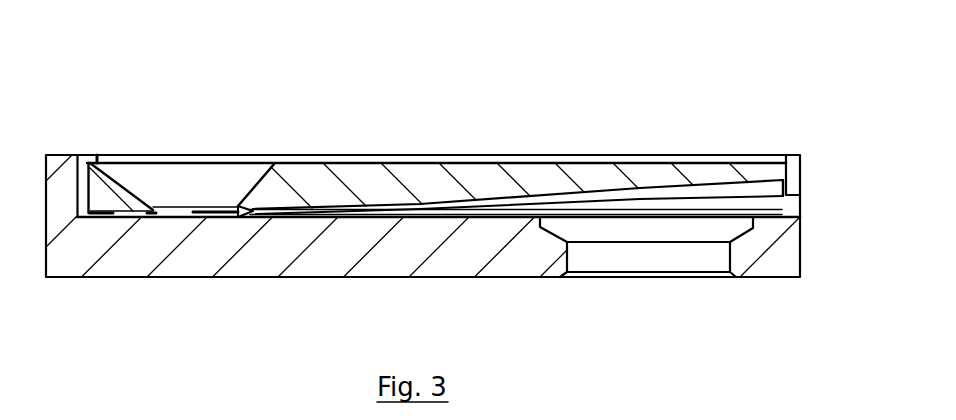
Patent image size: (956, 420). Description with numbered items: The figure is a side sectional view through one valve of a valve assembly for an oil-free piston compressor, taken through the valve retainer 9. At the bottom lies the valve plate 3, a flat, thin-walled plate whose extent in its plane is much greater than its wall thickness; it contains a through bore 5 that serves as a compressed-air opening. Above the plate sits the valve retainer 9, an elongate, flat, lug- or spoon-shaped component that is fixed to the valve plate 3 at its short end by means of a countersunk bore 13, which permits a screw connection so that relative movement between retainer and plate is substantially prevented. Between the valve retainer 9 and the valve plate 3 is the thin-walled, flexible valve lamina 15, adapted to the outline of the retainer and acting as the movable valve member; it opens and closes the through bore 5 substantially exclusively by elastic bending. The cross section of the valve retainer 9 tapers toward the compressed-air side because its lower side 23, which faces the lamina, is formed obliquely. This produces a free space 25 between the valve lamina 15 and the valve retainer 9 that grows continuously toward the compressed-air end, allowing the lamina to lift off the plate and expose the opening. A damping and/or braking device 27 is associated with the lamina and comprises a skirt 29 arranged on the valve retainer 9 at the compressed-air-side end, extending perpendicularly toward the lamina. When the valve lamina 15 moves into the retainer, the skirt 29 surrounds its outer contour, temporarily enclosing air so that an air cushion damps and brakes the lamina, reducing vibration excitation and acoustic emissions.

The valve plate 3 is at (128, 262).
The through bore 5 is at (660, 292).
The valve retainer 9 is at (420, 180).
The countersunk bore 13 is at (193, 185).
The valve lamina 15 is at (517, 216).
The lower side of the valve retainer 23 is at (670, 204).
The free space 25 is at (748, 205).
The damping and/or braking device 27 is at (797, 178).
The skirt 29 is at (788, 191).